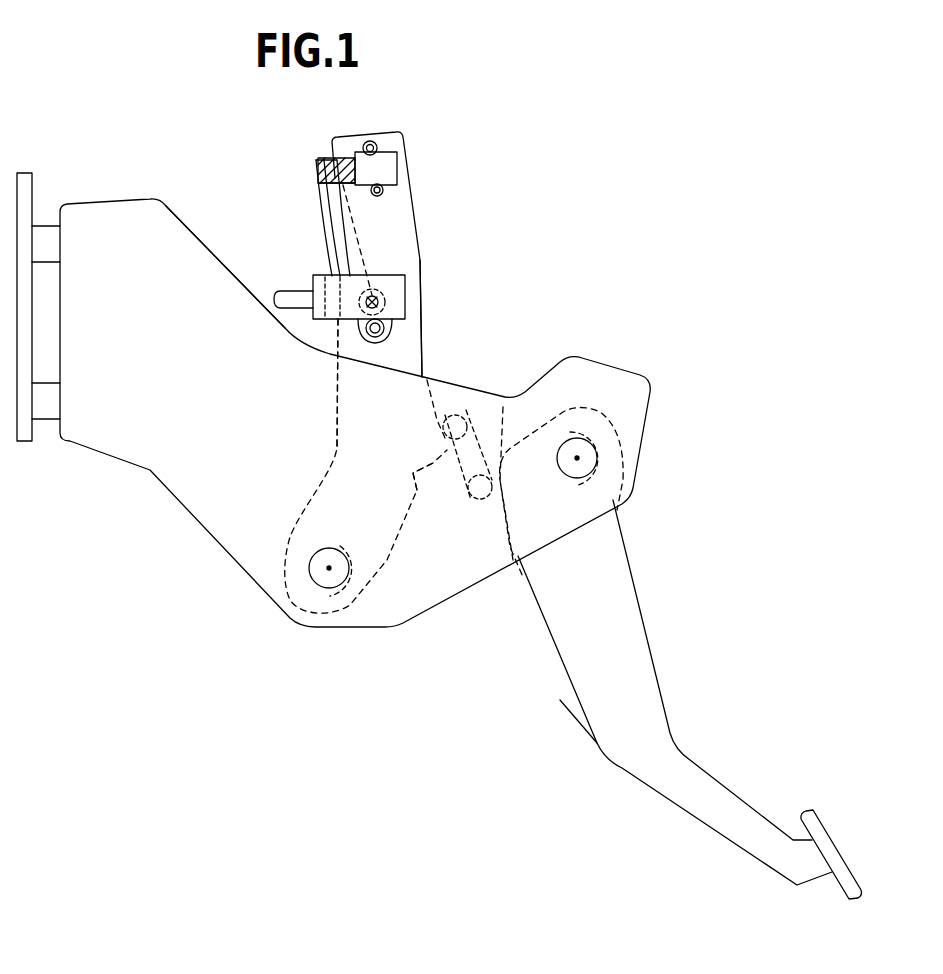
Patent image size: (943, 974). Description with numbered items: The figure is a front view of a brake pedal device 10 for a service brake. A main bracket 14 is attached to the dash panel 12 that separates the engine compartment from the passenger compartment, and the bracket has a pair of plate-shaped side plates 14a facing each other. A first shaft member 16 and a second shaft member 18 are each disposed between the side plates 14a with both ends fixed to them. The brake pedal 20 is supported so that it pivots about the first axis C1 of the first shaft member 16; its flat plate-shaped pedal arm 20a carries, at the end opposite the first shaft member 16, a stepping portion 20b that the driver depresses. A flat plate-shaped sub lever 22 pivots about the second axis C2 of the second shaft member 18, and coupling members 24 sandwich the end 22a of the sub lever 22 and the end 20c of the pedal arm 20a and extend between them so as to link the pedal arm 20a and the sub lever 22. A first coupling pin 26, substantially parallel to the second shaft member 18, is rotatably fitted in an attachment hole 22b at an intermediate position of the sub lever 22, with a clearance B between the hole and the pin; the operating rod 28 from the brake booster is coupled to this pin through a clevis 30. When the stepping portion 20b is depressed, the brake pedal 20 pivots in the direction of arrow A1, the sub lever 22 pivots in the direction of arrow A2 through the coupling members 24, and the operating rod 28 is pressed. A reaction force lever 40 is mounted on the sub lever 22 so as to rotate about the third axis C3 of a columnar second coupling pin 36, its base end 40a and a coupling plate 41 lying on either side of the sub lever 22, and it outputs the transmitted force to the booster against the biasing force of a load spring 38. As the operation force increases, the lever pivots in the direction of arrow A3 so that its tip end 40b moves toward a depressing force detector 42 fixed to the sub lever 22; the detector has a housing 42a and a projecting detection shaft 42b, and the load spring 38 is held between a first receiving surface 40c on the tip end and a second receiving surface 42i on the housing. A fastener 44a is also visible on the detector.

The brake pedal device 10 is at (163, 168).
The dash panel 12 is at (30, 206).
The main bracket 14 is at (141, 474).
The side plates 14a is at (187, 249).
The first shaft member 16 is at (572, 474).
The second shaft member 18 is at (334, 553).
The brake pedal 20 is at (680, 734).
The pedal arm 20a is at (597, 700).
The stepping portion 20b is at (817, 812).
The end of pedal arm 20c is at (583, 416).
The sub lever 22 is at (431, 371).
The end of sub lever 22a is at (416, 478).
The attachment hole 22b is at (385, 302).
The coupling members 24 is at (488, 445).
The first coupling pin 26 is at (363, 298).
The operating rod 28 is at (292, 300).
The clevis 30 is at (310, 324).
The second coupling pin 36 is at (375, 340).
The load spring 38 is at (321, 196).
The reaction force lever 40 is at (325, 241).
The base end of reaction force lever 40a is at (338, 363).
The tip end of reaction force lever 40b is at (318, 168).
The first receiving surface 40c is at (318, 176).
The coupling plate 41 is at (410, 263).
The depressing force detector 42 is at (398, 140).
The housing 42a is at (395, 165).
The detection shaft 42b is at (350, 192).
The second receiving surface 42i is at (395, 183).
The fastener 44a is at (373, 142).
The arrow A1 is at (584, 480).
The arrow A2 is at (348, 556).
The arrow A3 is at (347, 150).
The clearance B is at (395, 286).
The first axis C1 is at (577, 458).
The second axis C2 is at (329, 568).
The third axis C3 is at (384, 331).